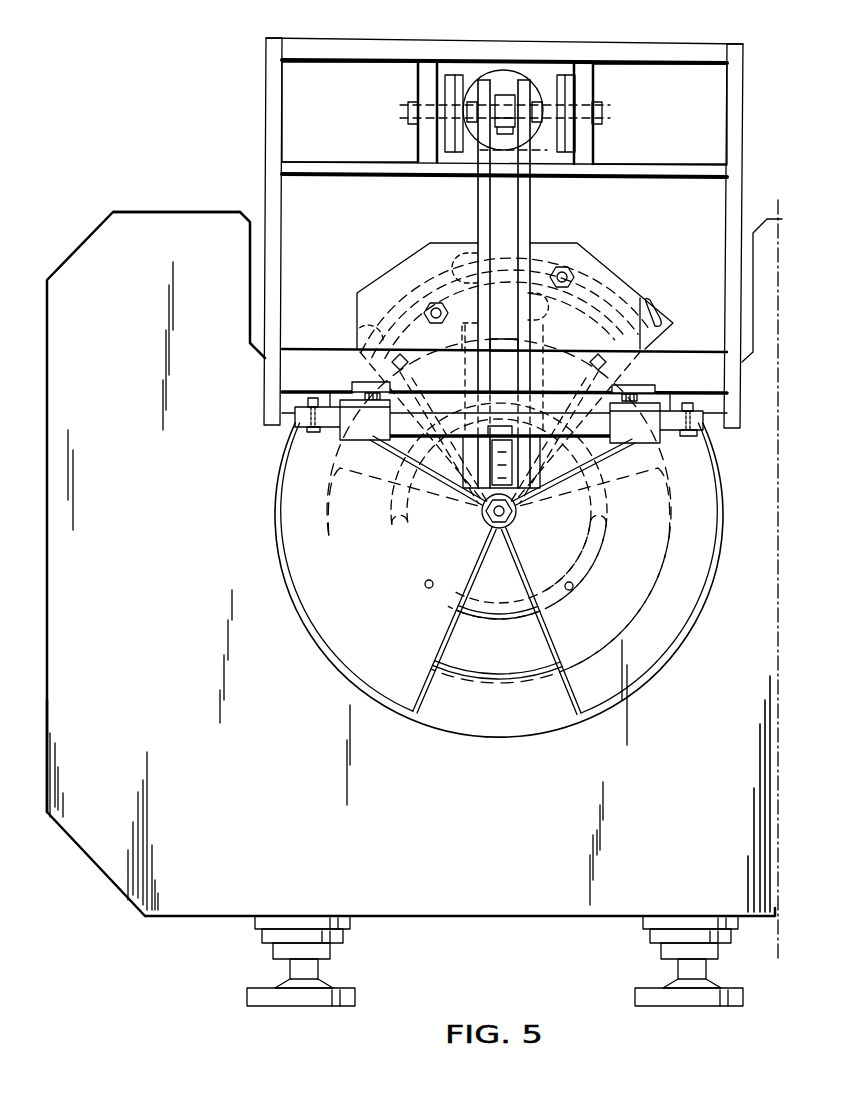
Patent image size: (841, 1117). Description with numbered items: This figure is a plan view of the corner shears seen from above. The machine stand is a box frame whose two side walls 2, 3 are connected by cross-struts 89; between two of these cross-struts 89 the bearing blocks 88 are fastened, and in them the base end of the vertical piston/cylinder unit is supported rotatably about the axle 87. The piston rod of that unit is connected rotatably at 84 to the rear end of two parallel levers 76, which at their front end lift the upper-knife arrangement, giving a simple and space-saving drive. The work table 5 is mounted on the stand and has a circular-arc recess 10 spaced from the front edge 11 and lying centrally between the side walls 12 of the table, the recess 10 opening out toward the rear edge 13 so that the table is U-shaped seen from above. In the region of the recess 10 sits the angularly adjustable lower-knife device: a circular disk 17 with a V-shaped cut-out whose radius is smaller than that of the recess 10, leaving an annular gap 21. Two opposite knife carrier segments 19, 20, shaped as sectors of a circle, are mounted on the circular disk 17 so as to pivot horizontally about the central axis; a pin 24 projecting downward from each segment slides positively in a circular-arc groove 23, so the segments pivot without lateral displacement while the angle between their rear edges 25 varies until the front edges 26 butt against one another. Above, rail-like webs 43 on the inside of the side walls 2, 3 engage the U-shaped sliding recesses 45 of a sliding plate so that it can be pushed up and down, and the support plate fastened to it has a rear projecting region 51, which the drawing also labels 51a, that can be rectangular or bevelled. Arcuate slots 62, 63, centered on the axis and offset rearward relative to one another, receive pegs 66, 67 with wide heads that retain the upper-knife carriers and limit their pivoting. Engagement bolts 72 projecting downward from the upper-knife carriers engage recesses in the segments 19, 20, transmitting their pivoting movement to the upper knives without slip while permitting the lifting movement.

The side wall 2 is at (266, 103).
The side wall 3 is at (743, 97).
The work table 5 is at (83, 675).
The recess 10 is at (500, 735).
The front edge 11 is at (556, 918).
The side walls of the work table 12 is at (47, 355).
The rear edge 13 is at (153, 212).
The circular disk 17 is at (476, 690).
The knife carrier segment 19 is at (303, 577).
The knife carrier segment 20 is at (684, 606).
The annular gap 21 is at (557, 722).
The groove 23 is at (508, 622).
The pin 24 is at (425, 583).
The rear edges 25 is at (417, 500).
The front edges 26 is at (445, 630).
The web 43 is at (300, 430).
The sliding recess 45 is at (354, 470).
The rear projecting region 51 is at (382, 292).
The right arm 51a is at (605, 265).
The arcuate slot 62 is at (628, 300).
The arcuate slot 63 is at (378, 335).
The peg 66 is at (566, 268).
The peg 67 is at (434, 300).
The engagement bolt 72 is at (392, 366).
The lever 76 is at (478, 198).
The rotatable connection 84 is at (505, 95).
The axle 87 is at (602, 116).
The bearing block 88 is at (590, 62).
The cross-strut 89 is at (333, 58).